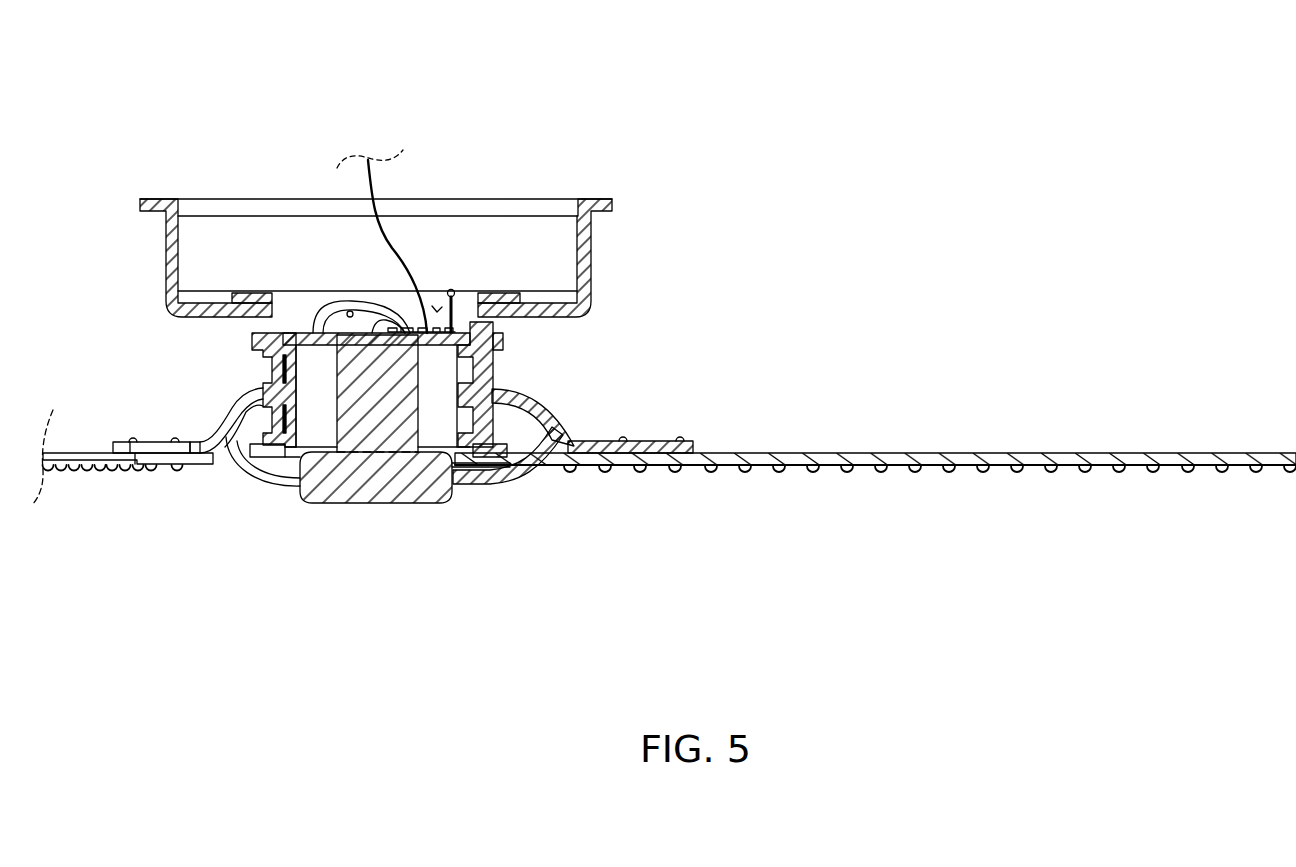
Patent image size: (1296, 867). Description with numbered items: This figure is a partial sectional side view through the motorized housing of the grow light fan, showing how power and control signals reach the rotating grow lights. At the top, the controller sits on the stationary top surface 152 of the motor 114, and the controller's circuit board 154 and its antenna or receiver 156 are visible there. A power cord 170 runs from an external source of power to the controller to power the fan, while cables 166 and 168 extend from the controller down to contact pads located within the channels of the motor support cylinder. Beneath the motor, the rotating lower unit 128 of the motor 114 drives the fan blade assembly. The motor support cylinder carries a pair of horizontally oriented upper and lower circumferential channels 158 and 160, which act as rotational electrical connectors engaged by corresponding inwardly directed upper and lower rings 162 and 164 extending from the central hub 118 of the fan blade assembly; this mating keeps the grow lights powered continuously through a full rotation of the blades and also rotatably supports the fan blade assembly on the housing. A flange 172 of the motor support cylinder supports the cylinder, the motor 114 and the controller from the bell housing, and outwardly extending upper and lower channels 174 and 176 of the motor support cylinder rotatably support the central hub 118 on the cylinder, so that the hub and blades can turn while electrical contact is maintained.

The motor 114 is at (293, 440).
The central hub 118 is at (265, 380).
The rotating lower unit 128 is at (362, 493).
The stationary top surface 152 is at (297, 337).
The circuit board 154 is at (493, 368).
The antenna or receiver 156 is at (472, 303).
The upper circumferential channel 158 is at (432, 432).
The lower circumferential channel 160 is at (450, 447).
The upper ring 162 is at (275, 368).
The lower ring 164 is at (320, 396).
The cable 166 is at (332, 300).
The cable 168 is at (345, 312).
The power cord 170 is at (397, 250).
The flange 172 is at (250, 300).
The upper channel 174 is at (498, 342).
The lower channel 176 is at (503, 448).